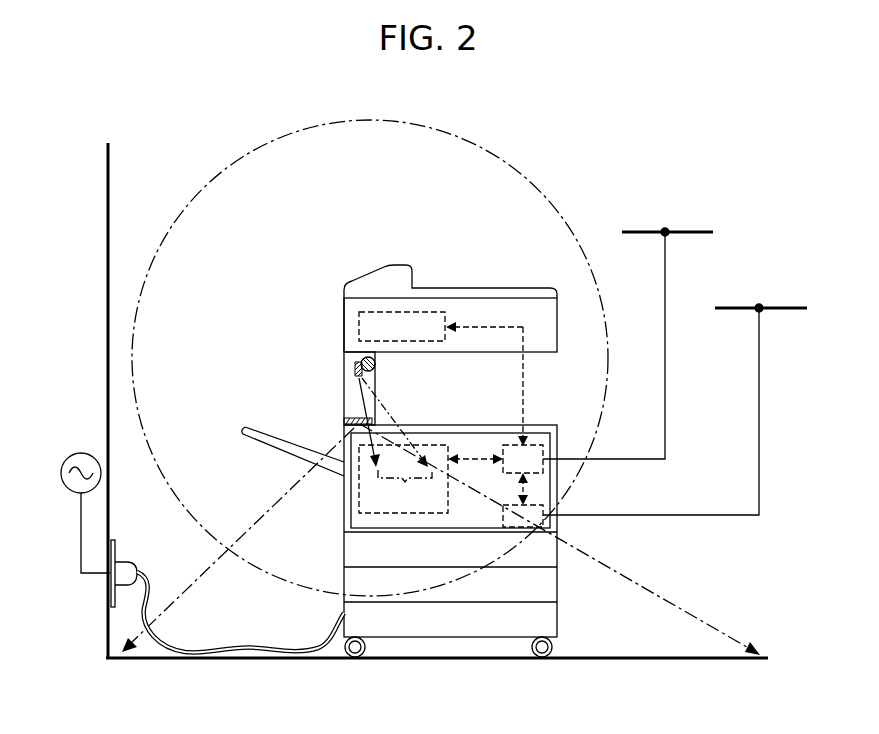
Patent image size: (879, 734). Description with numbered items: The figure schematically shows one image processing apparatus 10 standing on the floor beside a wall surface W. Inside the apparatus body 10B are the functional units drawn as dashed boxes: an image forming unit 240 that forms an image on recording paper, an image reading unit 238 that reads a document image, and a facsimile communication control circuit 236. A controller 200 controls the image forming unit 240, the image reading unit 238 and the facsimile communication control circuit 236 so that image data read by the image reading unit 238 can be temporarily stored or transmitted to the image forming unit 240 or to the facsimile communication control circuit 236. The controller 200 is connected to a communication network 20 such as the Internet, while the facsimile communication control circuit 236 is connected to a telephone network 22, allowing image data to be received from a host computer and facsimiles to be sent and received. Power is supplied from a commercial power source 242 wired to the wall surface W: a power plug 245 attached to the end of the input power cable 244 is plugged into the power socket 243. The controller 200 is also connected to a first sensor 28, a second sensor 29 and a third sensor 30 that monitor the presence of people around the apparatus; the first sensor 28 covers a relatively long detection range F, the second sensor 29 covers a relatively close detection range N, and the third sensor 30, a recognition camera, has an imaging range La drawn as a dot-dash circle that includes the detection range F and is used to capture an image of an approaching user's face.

The image processing apparatus 10 is at (356, 250).
The apparatus body / control unit housing 10B is at (560, 470).
The communication network 20 is at (662, 230).
The telephone network 22 is at (770, 306).
The first sensor 28 is at (344, 420).
The second sensor 29 is at (354, 366).
The third sensor 30 is at (374, 368).
The controller 200 is at (546, 447).
The facsimile communication control circuit 236 is at (543, 514).
The image reading unit 238 is at (358, 326).
The image forming unit 240 is at (342, 505).
The commercial power source 242 is at (81, 453).
The power socket 243 is at (113, 540).
The input power cable 244 is at (168, 640).
The power plug 245 is at (132, 566).
The wall surface W is at (108, 222).
The detection range F is at (758, 665).
The detection range La is at (487, 147).
The detection range N is at (405, 490).